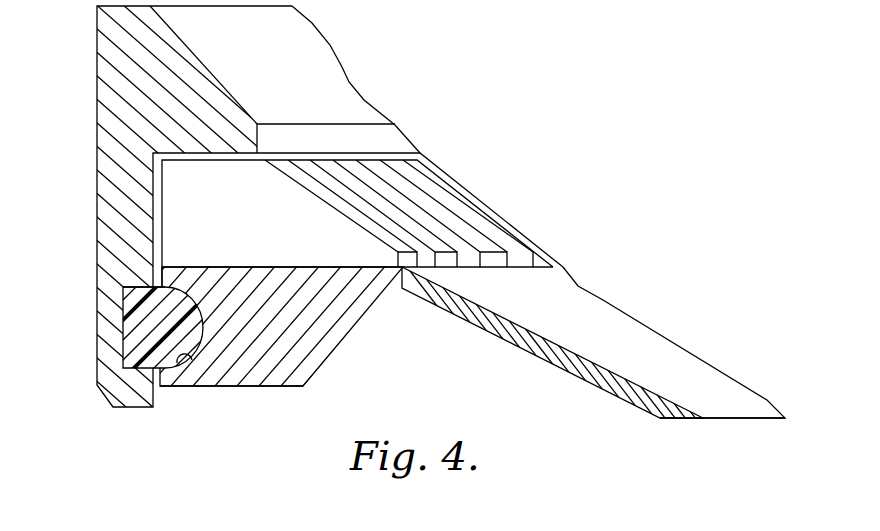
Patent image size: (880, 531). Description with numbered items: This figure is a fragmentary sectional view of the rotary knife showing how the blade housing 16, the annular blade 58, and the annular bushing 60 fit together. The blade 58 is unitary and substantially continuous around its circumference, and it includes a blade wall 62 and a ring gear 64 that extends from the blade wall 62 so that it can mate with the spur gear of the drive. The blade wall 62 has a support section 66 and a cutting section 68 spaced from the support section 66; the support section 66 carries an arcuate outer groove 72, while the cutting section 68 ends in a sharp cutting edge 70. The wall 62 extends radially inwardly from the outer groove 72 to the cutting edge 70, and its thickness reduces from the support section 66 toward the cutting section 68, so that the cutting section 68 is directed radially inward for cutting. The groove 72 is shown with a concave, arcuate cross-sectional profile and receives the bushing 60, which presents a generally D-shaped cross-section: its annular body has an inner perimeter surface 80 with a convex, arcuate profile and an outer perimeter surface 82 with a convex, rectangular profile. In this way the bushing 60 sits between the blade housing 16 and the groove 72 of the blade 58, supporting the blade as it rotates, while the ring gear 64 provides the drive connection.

The blade housing 16 is at (337, 87).
The outer perimeter surface 82 is at (123, 302).
The ring gear 64 is at (432, 188).
The annular blade 58 is at (520, 253).
The blade wall 62 is at (355, 315).
The support section 66 is at (280, 370).
The annular bushing 60 is at (143, 338).
The inner perimeter surface 80 is at (187, 284).
The arcuate outer groove 72 is at (177, 362).
The cutting section 68 is at (597, 310).
The cutting edge 70 is at (723, 418).